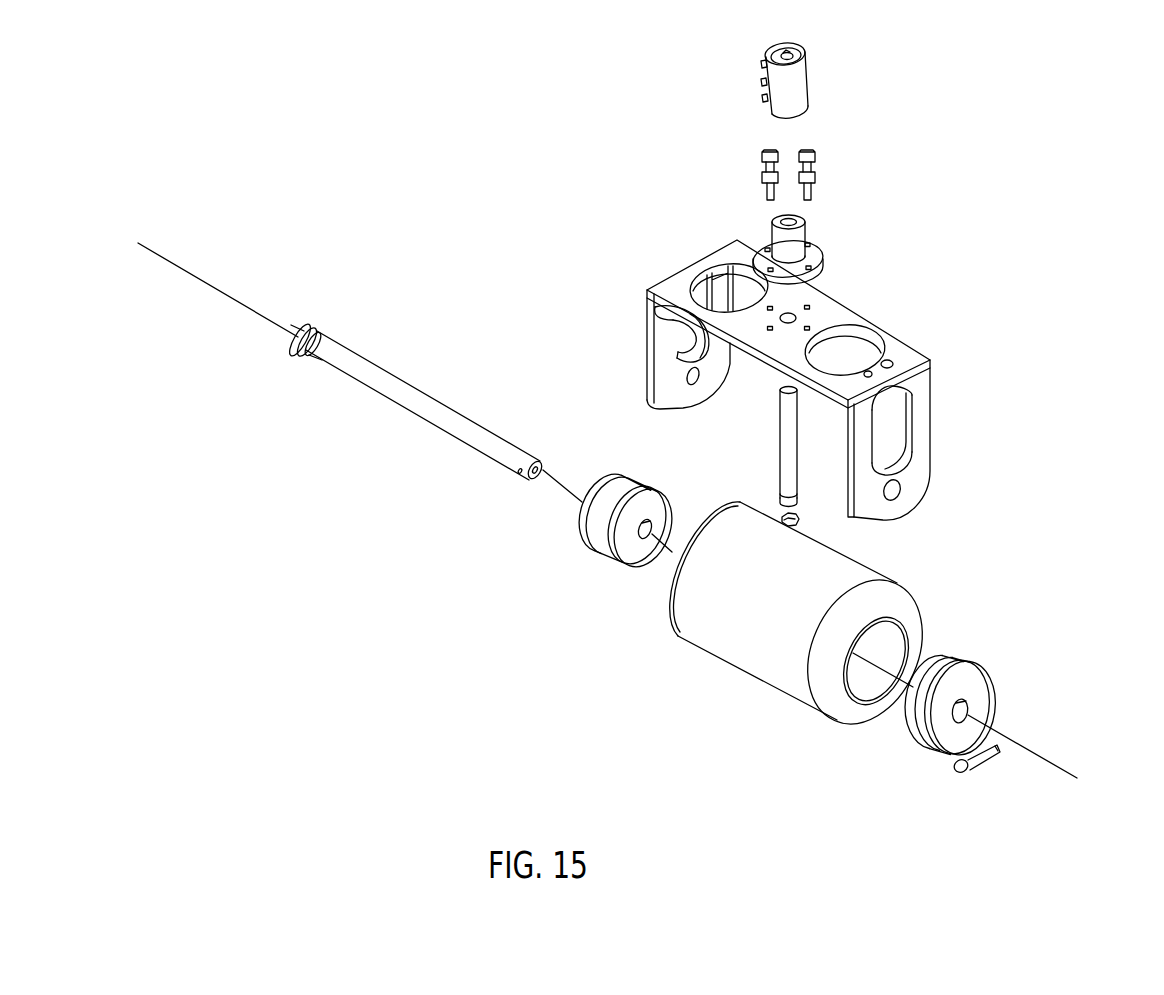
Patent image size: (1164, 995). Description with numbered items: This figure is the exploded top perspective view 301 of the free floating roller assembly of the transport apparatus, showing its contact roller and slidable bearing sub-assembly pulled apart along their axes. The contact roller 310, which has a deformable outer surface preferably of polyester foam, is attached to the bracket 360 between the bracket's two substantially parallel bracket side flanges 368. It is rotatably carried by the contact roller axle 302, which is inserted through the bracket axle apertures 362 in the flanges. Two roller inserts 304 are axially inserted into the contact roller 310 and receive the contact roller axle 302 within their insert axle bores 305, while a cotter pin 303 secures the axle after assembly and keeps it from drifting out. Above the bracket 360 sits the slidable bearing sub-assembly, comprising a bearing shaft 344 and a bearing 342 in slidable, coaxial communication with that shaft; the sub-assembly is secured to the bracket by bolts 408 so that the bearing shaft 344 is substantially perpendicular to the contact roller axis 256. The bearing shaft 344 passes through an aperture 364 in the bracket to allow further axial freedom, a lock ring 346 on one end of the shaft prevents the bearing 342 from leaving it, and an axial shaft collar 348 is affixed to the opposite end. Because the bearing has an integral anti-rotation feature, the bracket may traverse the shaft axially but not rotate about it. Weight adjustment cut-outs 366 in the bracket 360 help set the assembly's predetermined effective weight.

The exploded top perspective view 301 is at (600, 132).
The contact roller axis 256 is at (213, 283).
The contact roller axle 302 is at (362, 373).
The cotter pin 303 is at (962, 778).
The roller insert 304 is at (597, 560).
The insert axle bore 305 is at (657, 523).
The contact roller 310 is at (715, 633).
The bearing 342 is at (798, 235).
The bearing shaft 344 is at (787, 447).
The lock ring 346 is at (799, 522).
The axial shaft collar 348 is at (805, 92).
The bracket 360 is at (900, 345).
The bracket axle aperture 362 is at (700, 387).
The aperture 364 is at (797, 319).
The weight adjustment cut-out 366 is at (893, 366).
The bracket side flange 368 is at (662, 390).
The bolt 408 is at (813, 152).